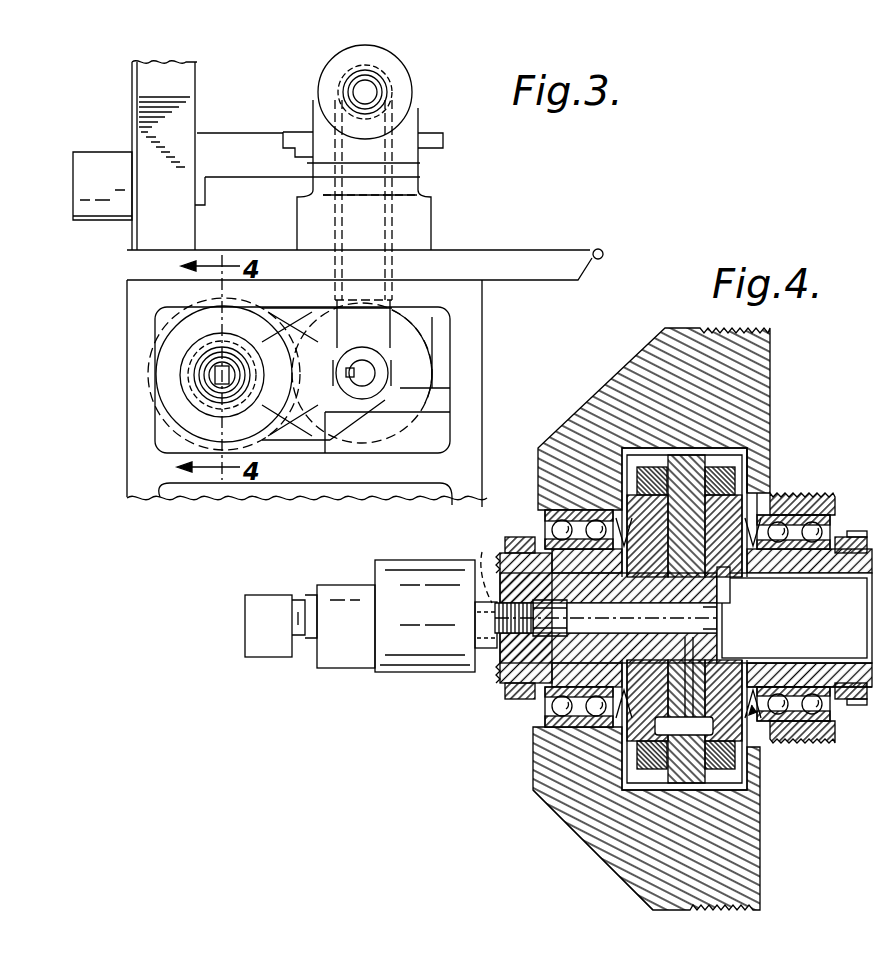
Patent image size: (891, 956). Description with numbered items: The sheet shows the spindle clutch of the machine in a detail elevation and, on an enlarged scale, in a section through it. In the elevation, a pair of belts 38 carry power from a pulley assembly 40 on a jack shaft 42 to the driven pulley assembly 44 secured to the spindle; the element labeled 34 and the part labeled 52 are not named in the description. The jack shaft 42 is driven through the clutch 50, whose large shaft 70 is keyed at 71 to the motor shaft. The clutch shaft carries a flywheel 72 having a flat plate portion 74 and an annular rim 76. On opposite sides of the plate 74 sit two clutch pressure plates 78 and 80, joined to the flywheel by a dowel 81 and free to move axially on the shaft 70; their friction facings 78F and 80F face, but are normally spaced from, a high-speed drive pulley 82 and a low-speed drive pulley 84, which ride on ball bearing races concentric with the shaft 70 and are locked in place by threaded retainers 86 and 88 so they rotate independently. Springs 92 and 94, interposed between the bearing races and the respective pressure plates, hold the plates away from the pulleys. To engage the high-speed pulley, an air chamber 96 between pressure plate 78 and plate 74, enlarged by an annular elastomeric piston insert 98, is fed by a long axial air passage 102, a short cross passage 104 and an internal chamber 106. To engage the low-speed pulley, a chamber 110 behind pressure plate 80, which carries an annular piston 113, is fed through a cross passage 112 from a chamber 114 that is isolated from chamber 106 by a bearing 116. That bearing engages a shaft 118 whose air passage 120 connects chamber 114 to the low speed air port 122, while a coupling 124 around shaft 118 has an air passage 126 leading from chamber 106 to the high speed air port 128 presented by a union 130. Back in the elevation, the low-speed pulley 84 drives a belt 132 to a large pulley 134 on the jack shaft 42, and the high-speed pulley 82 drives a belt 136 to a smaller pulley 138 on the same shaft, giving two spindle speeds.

In FIG. 3, the cylinder 34 is at (405, 70).
In FIG. 3, the belts 38 is at (405, 312).
In FIG. 3, the pulley assembly 40 is at (387, 385).
In FIG. 3, the jack shaft 42 is at (365, 373).
In FIG. 3, the driven pulley assembly 44 is at (366, 44).
In FIG. 3, the clutch 50 is at (178, 367).
In FIG. 4, the clutch 50 is at (693, 619).
In FIG. 3, the pin 52 is at (447, 146).
In FIG. 4, the shaft 70 is at (807, 677).
In FIG. 4, the key 71 is at (838, 588).
In FIG. 4, the flywheel 72 is at (722, 440).
In FIG. 4, the plate portion 74 is at (735, 500).
In FIG. 4, the rim 76 is at (722, 450).
In FIG. 4, the pressure plate 78 is at (650, 777).
In FIG. 4, the friction facing 78F is at (613, 818).
In FIG. 4, the pressure plate 80 is at (690, 523).
In FIG. 4, the friction facing 80F is at (757, 753).
In FIG. 4, the dowel 81 is at (749, 693).
In FIG. 3, the high-speed drive pulley 82 is at (177, 330).
In FIG. 4, the high-speed drive pulley 82 is at (768, 356).
In FIG. 3, the low-speed drive pulley 84 is at (128, 430).
In FIG. 4, the low-speed drive pulley 84 is at (835, 498).
In FIG. 4, the retainer 86 is at (507, 695).
In FIG. 4, the retainer 88 is at (858, 550).
In FIG. 4, the spring 92 is at (622, 748).
In FIG. 4, the spring 94 is at (752, 705).
In FIG. 4, the air chamber 96 is at (707, 790).
In FIG. 4, the piston insert 98 is at (663, 782).
In FIG. 4, the air passage 102 is at (661, 590).
In FIG. 4, the cross passage 104 is at (545, 540).
In FIG. 4, the chamber 106 is at (552, 638).
In FIG. 4, the chamber 110 is at (765, 857).
In FIG. 4, the cross passage 112 is at (706, 640).
In FIG. 4, the annular piston 113 is at (757, 793).
In FIG. 4, the chamber 114 is at (700, 619).
In FIG. 4, the bearing 116 is at (604, 637).
In FIG. 4, the shaft 118 is at (600, 607).
In FIG. 4, the air passage 120 is at (605, 622).
In FIG. 4, the low speed air port 122 is at (268, 655).
In FIG. 4, the coupling 124 is at (493, 667).
In FIG. 4, the air passage 126 is at (470, 567).
In FIG. 4, the high speed air port 128 is at (343, 670).
In FIG. 4, the union 130 is at (425, 552).
In FIG. 3, the belt 132 is at (313, 420).
In FIG. 3, the large pulley 134 is at (423, 340).
In FIG. 3, the belt 136 is at (288, 432).
In FIG. 3, the smaller pulley 138 is at (398, 380).